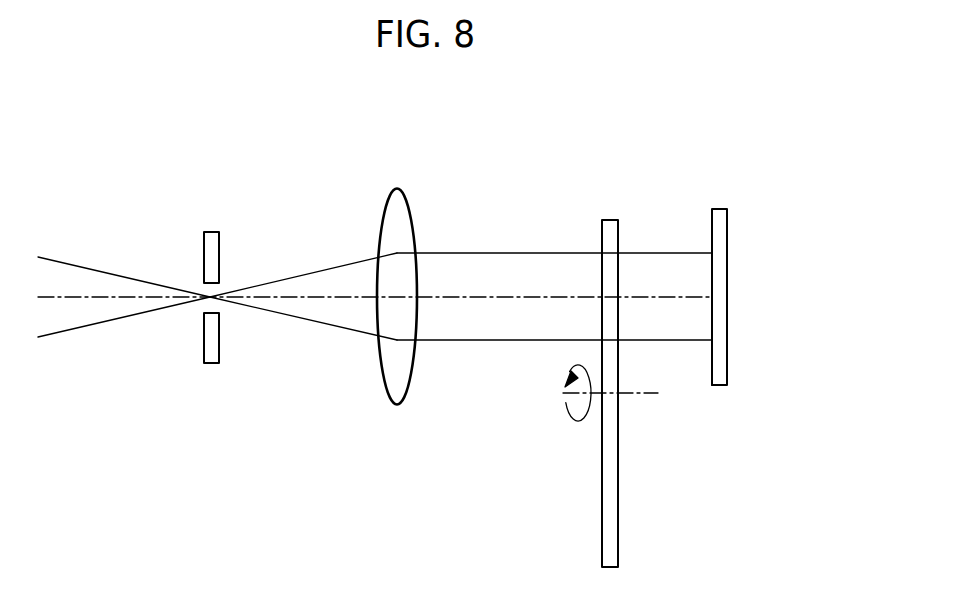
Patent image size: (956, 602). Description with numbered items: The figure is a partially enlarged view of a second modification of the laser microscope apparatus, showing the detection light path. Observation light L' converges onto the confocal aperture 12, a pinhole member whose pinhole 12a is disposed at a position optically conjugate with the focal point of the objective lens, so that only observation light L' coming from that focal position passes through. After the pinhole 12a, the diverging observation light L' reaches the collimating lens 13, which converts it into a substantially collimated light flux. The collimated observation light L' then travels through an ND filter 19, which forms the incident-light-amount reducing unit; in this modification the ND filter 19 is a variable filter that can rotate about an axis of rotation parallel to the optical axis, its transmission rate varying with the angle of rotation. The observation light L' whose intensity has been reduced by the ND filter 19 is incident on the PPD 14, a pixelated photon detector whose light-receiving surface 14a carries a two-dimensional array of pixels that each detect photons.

The confocal aperture 12 is at (208, 230).
The pinhole 12a is at (203, 302).
The collimating lens 13 is at (395, 188).
The observation light L' is at (461, 258).
The ND filter 19 is at (608, 220).
The PPD 14 is at (717, 209).
The light-receiving surface 14a is at (710, 360).